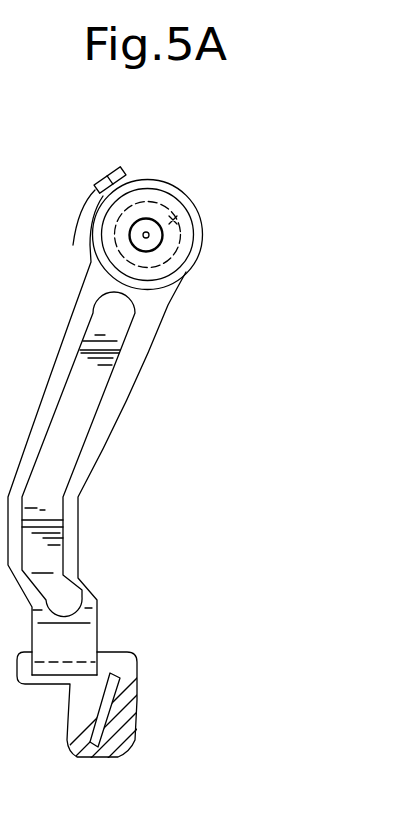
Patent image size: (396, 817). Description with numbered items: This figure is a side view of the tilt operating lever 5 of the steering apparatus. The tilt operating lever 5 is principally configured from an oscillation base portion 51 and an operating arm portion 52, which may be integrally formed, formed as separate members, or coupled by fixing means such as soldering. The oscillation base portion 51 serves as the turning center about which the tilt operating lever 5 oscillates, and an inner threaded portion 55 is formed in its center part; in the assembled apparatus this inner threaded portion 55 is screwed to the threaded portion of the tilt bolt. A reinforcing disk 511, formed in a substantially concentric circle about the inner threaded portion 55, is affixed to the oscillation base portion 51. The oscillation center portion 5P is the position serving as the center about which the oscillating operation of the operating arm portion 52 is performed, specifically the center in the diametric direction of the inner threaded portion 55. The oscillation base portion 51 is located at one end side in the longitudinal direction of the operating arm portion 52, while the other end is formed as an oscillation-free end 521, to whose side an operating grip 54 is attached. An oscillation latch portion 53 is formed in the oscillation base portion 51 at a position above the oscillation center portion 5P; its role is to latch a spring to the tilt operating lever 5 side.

The tilt operating lever 5 is at (122, 400).
The oscillation center portion 5P is at (190, 205).
The oscillation base portion 51 is at (195, 262).
The reinforcing disk 511 is at (189, 233).
The operating arm portion 52 is at (67, 460).
The oscillation-free end 521 is at (90, 642).
The oscillation latch portion 53 is at (73, 246).
The operating grip 54 is at (134, 728).
The inner threaded portion 55 is at (146, 225).